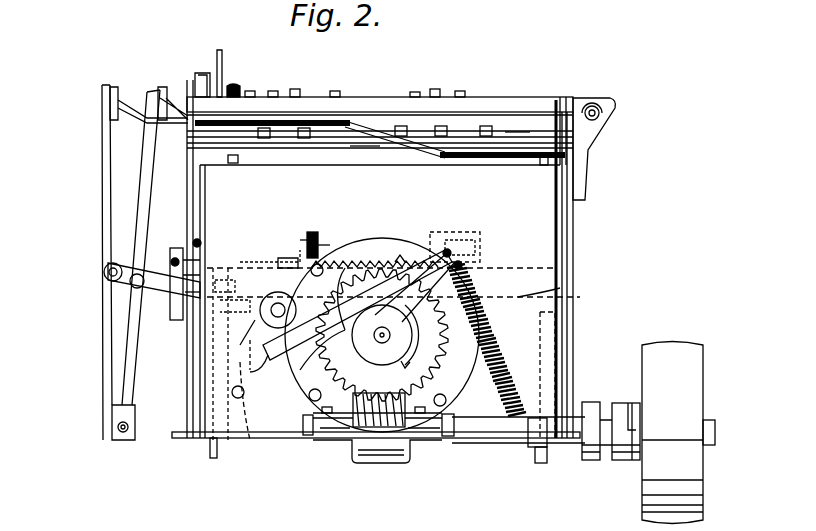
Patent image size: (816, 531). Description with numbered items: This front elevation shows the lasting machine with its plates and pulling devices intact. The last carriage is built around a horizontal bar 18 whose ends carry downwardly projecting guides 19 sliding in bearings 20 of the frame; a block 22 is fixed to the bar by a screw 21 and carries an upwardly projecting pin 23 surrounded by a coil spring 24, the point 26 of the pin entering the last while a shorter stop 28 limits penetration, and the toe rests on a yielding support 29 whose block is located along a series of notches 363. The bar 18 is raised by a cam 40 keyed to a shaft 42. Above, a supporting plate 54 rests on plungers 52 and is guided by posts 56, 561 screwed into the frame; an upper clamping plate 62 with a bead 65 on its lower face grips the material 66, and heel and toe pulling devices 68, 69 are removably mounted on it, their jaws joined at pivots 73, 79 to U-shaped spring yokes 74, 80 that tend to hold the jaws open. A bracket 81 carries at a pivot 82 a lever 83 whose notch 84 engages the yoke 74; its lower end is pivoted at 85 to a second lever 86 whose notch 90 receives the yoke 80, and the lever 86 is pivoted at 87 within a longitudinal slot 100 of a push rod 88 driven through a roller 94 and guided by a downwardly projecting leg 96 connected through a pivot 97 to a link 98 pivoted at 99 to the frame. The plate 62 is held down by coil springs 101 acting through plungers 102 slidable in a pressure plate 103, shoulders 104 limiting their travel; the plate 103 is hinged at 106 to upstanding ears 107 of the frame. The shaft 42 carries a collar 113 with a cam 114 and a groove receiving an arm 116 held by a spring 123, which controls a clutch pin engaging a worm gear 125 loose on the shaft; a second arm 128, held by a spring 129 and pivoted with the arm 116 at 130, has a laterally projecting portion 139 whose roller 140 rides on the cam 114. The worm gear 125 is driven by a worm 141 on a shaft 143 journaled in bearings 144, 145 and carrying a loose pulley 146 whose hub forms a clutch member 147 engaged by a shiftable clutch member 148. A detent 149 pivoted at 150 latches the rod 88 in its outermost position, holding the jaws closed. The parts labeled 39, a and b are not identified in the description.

The horizontal bar 18 is at (528, 272).
The downwardly projecting guides 19 is at (567, 290).
The bearings 20 is at (530, 325).
The screw 21 is at (284, 260).
The block 22 is at (265, 262).
The upwardly projecting pin 23 is at (332, 237).
The coil spring 24 is at (374, 262).
The point 26 is at (314, 240).
The stop 28 is at (304, 242).
The yielding support 29 is at (478, 246).
The stop 39 is at (470, 236).
The cam 40 is at (425, 450).
The shaft 42 is at (382, 335).
The plungers 52 is at (238, 158).
The supporting plate 54 is at (365, 150).
The post 56 is at (212, 82).
The post 561 is at (563, 128).
The upper clamping plate 62 is at (262, 140).
The bead 65 is at (440, 142).
The material 66 is at (334, 148).
The heel pulling device 68 is at (304, 142).
The toe pulling device 69 is at (402, 150).
The pivots 73 is at (312, 125).
The U-shaped yoke 74 is at (182, 112).
The pivots 79 is at (510, 130).
The U-shaped yoke 80 is at (122, 103).
The bracket 81 is at (168, 305).
The pivot 82 is at (125, 288).
The lever 83 is at (142, 247).
The notch 84 is at (163, 78).
The pivot 85 is at (112, 440).
The second lever 86 is at (108, 165).
The pivot 87 is at (104, 272).
The push rod 88 is at (160, 290).
The notch 90 is at (116, 78).
The roller 94 is at (276, 310).
The downwardly projecting leg 96 is at (232, 275).
The pivot 97 is at (252, 340).
The link 98 is at (246, 393).
The pivot 99 is at (250, 442).
The longitudinal slot 100 is at (137, 290).
The coil springs 101 is at (498, 150).
The plungers 102 is at (487, 140).
The pressure plate 103 is at (398, 98).
The shoulders 104 is at (452, 97).
The pivot 106 is at (600, 106).
The upstanding ears 107 is at (590, 146).
The collar 113 is at (376, 342).
The cam 114 is at (336, 368).
The arm 116 is at (357, 304).
The spring 123 is at (595, 380).
The worm gear 125 is at (385, 380).
The arm 128 is at (416, 265).
The spring 129 is at (390, 335).
The pivot 130 is at (252, 352).
The laterally projecting portion 139 is at (376, 262).
The roller 140 is at (393, 290).
The worm 141 is at (380, 430).
The shaft 143 is at (507, 448).
The bearing 144 is at (330, 440).
The bearing 145 is at (560, 452).
The loose pulley 146 is at (703, 350).
The clutch member 147 is at (640, 400).
The clutch member 148 is at (618, 405).
The detent 149 is at (176, 255).
The pivot 150 is at (200, 240).
The notches 363 is at (390, 254).
The spring a is at (486, 338).
The direction arrow b is at (410, 336).